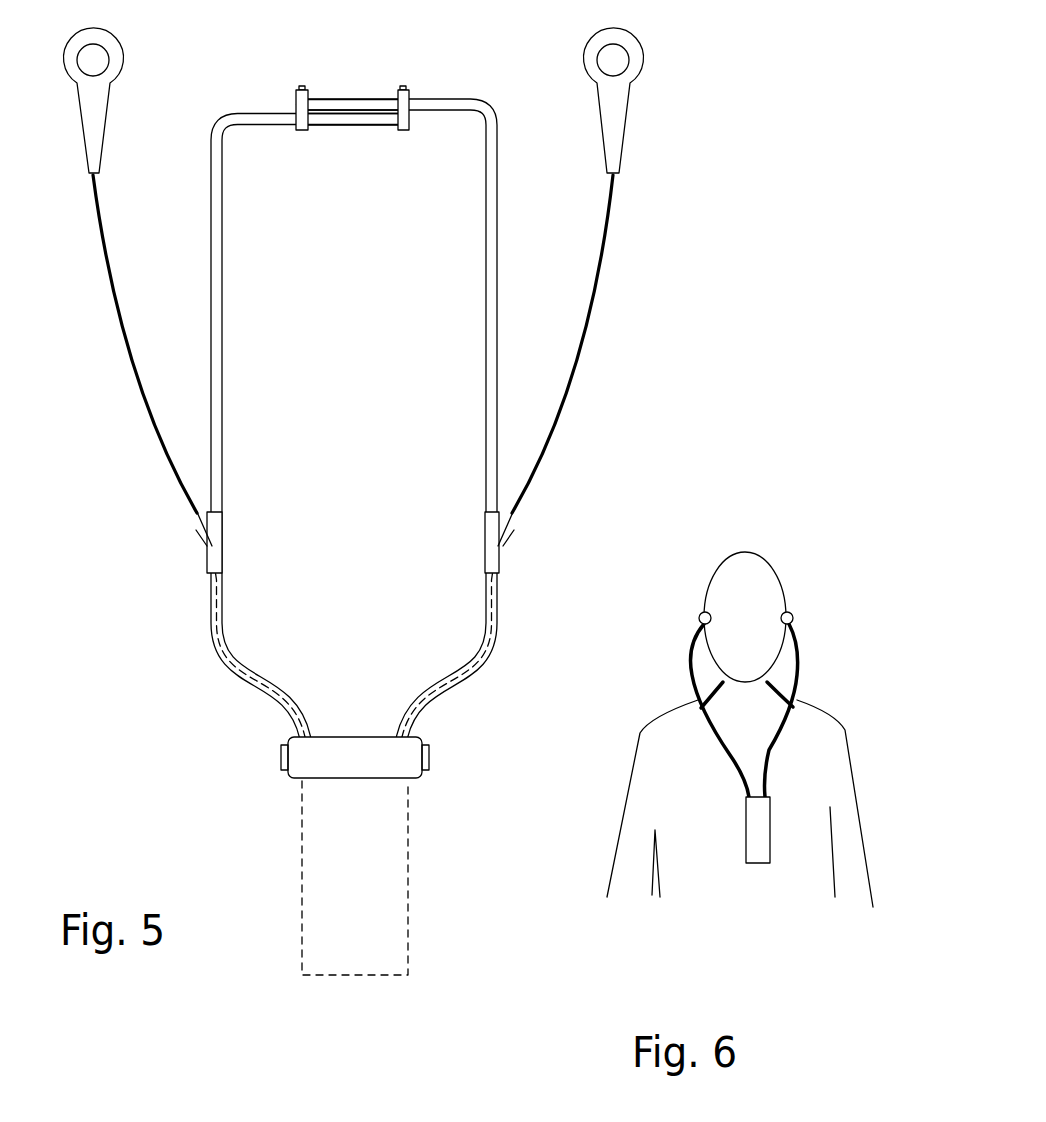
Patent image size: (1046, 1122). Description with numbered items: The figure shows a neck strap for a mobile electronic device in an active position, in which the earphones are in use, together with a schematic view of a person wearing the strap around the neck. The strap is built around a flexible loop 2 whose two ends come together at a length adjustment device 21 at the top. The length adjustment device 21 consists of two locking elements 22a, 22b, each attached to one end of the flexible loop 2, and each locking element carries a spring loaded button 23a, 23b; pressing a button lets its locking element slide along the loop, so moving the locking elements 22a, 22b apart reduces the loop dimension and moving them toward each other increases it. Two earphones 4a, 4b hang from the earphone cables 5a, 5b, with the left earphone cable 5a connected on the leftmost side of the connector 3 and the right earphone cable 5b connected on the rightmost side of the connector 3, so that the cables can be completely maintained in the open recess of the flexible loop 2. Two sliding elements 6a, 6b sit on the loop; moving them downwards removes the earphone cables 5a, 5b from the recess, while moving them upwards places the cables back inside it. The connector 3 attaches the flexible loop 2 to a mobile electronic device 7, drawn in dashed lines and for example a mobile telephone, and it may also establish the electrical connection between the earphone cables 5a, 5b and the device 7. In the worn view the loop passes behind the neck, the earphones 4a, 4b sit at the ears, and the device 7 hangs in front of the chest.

In FIG. 5, the flexible loop 2 is at (486, 400).
In FIG. 6, the flexible loop 2 is at (772, 746).
In FIG. 5, the connector 3 is at (415, 746).
In FIG. 5, the earphone 4a is at (117, 44).
In FIG. 6, the earphone 4a is at (700, 614).
In FIG. 5, the earphone 4b is at (637, 69).
In FIG. 6, the earphone 4b is at (792, 612).
In FIG. 5, the left earphone cable 5a is at (106, 218).
In FIG. 6, the left earphone cable 5a is at (690, 663).
In FIG. 5, the right earphone cable 5b is at (612, 195).
In FIG. 6, the right earphone cable 5b is at (798, 655).
In FIG. 5, the sliding element 6a is at (207, 548).
In FIG. 5, the sliding element 6b is at (508, 536).
In FIG. 5, the mobile electronic device 7 is at (398, 881).
In FIG. 6, the mobile electronic device 7 is at (763, 812).
In FIG. 5, the length adjustment device 21 is at (362, 62).
In FIG. 5, the locking element 22a is at (296, 108).
In FIG. 5, the locking element 22b is at (401, 130).
In FIG. 5, the spring loaded button 23a is at (302, 86).
In FIG. 5, the spring loaded button 23b is at (405, 87).